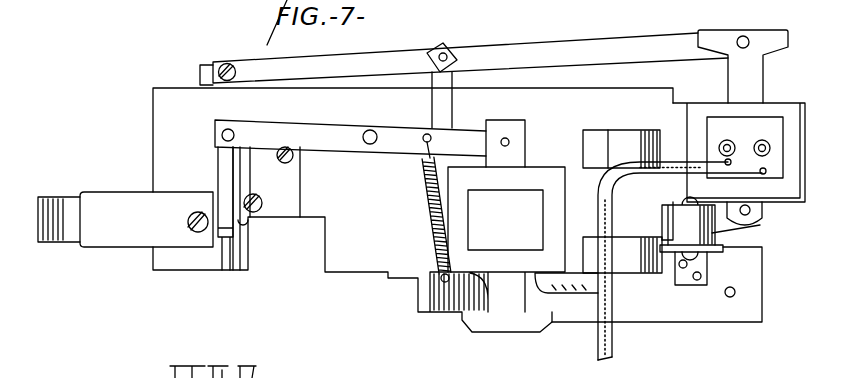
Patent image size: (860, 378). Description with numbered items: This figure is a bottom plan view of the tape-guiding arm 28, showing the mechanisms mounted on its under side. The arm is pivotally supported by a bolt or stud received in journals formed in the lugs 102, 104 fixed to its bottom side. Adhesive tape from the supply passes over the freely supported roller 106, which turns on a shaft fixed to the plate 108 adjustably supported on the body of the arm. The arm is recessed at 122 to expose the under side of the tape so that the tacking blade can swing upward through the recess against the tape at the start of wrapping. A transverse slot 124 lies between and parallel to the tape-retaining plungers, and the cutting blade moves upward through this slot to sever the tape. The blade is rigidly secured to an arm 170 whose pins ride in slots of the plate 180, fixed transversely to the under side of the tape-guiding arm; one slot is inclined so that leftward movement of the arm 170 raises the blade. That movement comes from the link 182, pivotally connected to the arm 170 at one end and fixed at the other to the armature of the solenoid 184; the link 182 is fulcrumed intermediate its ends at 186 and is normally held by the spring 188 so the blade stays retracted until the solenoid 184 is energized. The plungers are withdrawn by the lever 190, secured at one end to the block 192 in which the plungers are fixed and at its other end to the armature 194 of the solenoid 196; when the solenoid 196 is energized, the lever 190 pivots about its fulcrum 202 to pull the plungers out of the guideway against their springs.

The tape-guiding arm 28 is at (373, 292).
The lug 102 is at (625, 257).
The lug 104 is at (613, 138).
The roller 106 is at (712, 233).
The plate 108 is at (753, 295).
The recess 122 is at (298, 252).
The transverse slot 124 is at (223, 248).
The arm 170 is at (223, 168).
The plate 180 is at (237, 177).
The link 182 is at (332, 115).
The solenoid 184 is at (533, 143).
The fulcrum 186 is at (367, 130).
The spring 188 is at (430, 202).
The lever 190 is at (542, 30).
The block 192 is at (203, 77).
The armature 194 is at (758, 70).
The solenoid 196 is at (717, 127).
The fulcrum 202 is at (443, 45).